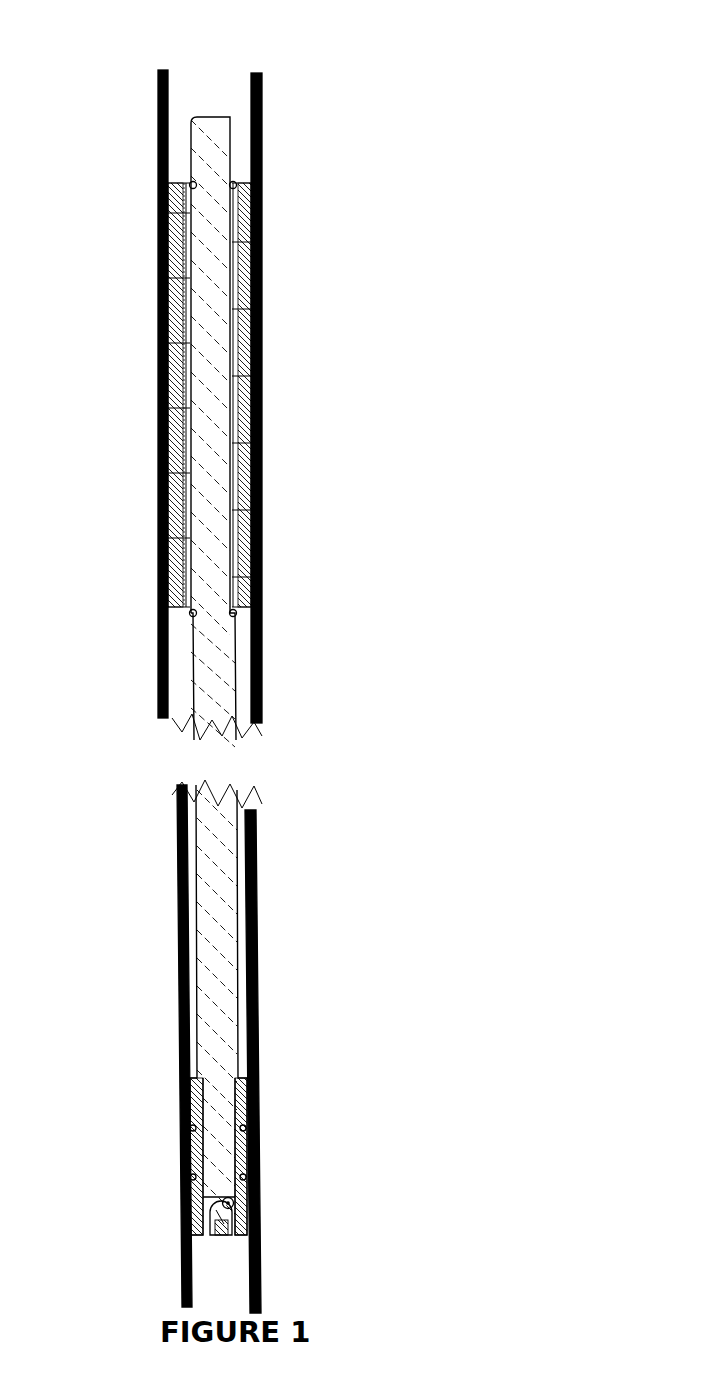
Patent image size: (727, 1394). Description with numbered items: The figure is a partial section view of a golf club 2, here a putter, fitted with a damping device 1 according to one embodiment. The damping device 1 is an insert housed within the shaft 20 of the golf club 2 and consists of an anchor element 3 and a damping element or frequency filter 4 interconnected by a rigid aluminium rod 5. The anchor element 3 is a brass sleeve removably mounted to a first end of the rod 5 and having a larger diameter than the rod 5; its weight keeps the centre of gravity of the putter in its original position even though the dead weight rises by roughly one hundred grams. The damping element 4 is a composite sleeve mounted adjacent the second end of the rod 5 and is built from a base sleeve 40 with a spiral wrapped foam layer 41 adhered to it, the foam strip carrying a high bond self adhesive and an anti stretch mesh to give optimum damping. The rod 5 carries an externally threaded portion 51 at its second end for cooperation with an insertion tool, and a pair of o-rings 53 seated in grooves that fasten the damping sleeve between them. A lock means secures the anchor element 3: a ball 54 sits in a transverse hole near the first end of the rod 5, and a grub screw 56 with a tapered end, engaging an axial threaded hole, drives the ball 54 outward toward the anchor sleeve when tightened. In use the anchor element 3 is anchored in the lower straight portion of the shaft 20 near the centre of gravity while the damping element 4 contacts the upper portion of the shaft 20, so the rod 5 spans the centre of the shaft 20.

The damping device 1 is at (212, 88).
The golf club 2 is at (382, 140).
The anchor element 3 is at (90, 1263).
The damping element 4 is at (245, 165).
The rod 5 is at (205, 915).
The shaft 20 is at (263, 373).
The base sleeve 40 is at (240, 450).
The foam layer 41 is at (166, 527).
The externally threaded portion 51 is at (200, 140).
The o-ring 53 is at (186, 183).
The ball 54 is at (236, 1204).
The grub screw 56 is at (233, 1228).